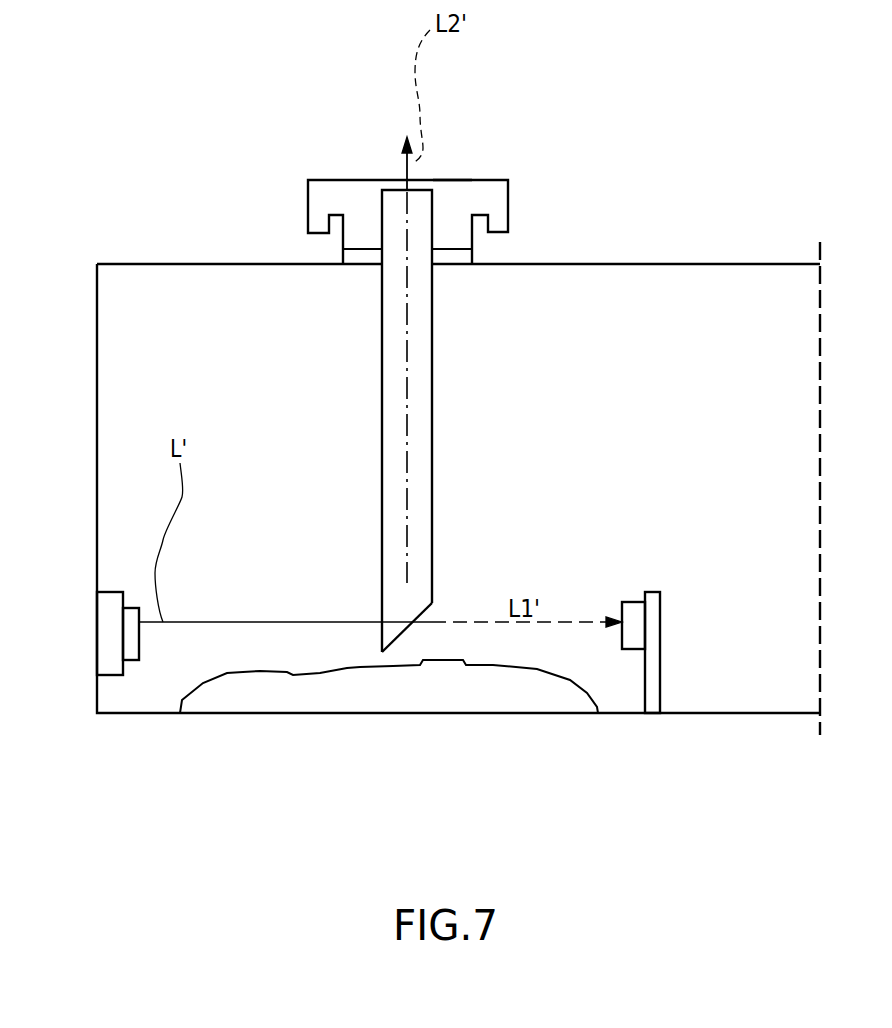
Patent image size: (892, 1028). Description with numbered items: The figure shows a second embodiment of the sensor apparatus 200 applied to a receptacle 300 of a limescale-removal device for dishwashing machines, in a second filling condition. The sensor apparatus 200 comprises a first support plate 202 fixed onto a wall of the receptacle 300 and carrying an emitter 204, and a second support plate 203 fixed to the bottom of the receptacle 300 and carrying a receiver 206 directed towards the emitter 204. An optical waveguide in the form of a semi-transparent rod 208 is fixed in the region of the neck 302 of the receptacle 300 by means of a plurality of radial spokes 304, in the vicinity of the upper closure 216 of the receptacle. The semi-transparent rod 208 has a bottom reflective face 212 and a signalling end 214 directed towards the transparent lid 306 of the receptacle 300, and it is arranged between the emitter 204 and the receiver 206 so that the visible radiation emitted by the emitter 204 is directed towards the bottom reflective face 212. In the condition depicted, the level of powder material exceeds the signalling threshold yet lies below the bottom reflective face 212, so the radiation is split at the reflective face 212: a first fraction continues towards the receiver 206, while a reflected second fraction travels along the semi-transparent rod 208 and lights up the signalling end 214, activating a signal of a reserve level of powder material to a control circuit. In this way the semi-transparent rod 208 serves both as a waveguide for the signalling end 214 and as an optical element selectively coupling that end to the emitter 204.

The sensor apparatus 200 is at (116, 654).
The first support plate 202 is at (107, 657).
The second support plate 203 is at (653, 672).
The emitter 204 is at (130, 643).
The receiver 206 is at (637, 635).
The semi-transparent rod 208 is at (410, 360).
The bottom reflective face 212 is at (410, 630).
The signalling end 214 is at (405, 180).
The cap 216 is at (308, 200).
The receptacle 300 is at (668, 266).
The neck 302 is at (472, 253).
The radial spokes 304 is at (447, 250).
The transparent lid 306 is at (437, 180).